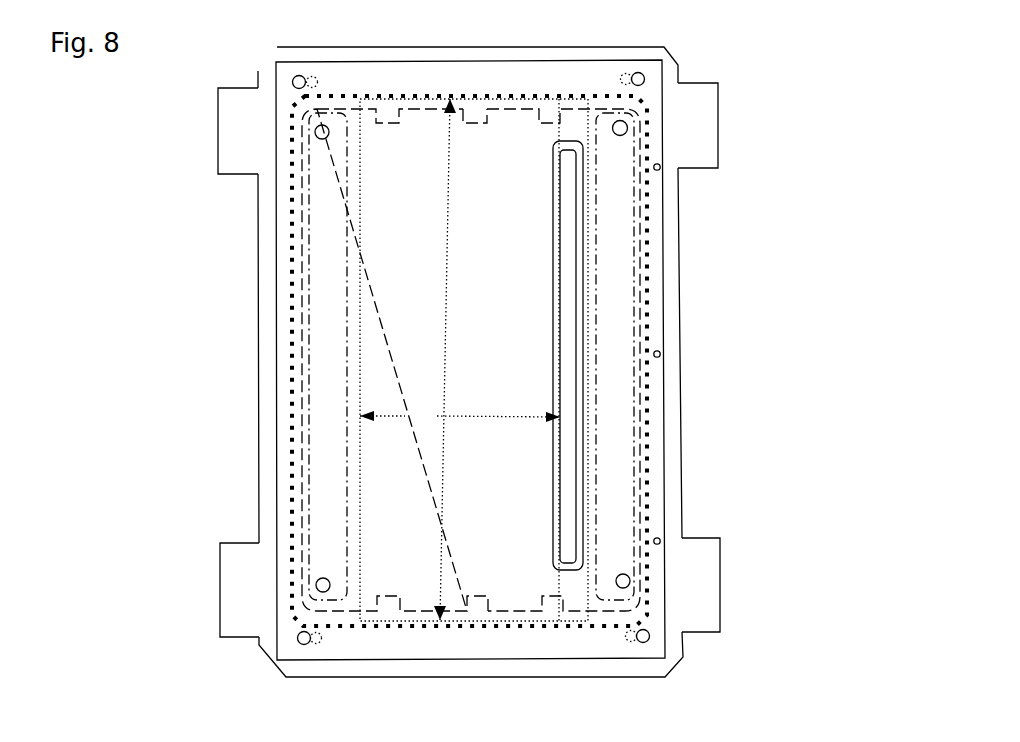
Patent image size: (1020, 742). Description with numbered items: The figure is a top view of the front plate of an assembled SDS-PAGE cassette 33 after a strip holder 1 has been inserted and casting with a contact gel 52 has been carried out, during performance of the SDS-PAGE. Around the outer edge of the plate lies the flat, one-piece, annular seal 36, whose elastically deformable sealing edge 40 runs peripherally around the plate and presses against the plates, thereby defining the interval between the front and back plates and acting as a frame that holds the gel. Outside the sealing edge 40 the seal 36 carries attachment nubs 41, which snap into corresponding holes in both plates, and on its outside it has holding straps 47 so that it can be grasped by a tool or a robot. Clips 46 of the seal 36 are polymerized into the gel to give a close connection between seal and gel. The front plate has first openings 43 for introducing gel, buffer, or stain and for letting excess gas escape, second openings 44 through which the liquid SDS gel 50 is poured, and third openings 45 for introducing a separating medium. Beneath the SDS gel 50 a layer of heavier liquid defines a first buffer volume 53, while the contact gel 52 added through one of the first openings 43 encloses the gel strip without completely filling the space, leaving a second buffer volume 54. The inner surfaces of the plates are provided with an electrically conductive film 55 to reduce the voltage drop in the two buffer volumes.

The strip holder 1 is at (568, 442).
The SDS-PAGE cassette 33 is at (100, 195).
The seal 36 is at (275, 365).
The sealing edge 40 is at (290, 272).
The attachment nubs 41 is at (645, 76).
The first openings 43 is at (628, 127).
The second openings 44 is at (315, 131).
The third openings 45 is at (660, 169).
The clips 46 is at (473, 119).
The holding straps 47 is at (233, 164).
The SDS gel 50 is at (474, 360).
The contact gel 52 is at (572, 128).
The first buffer volume 53 is at (309, 370).
The second buffer volume 54 is at (632, 376).
The electrically conductive film 55 is at (321, 243).